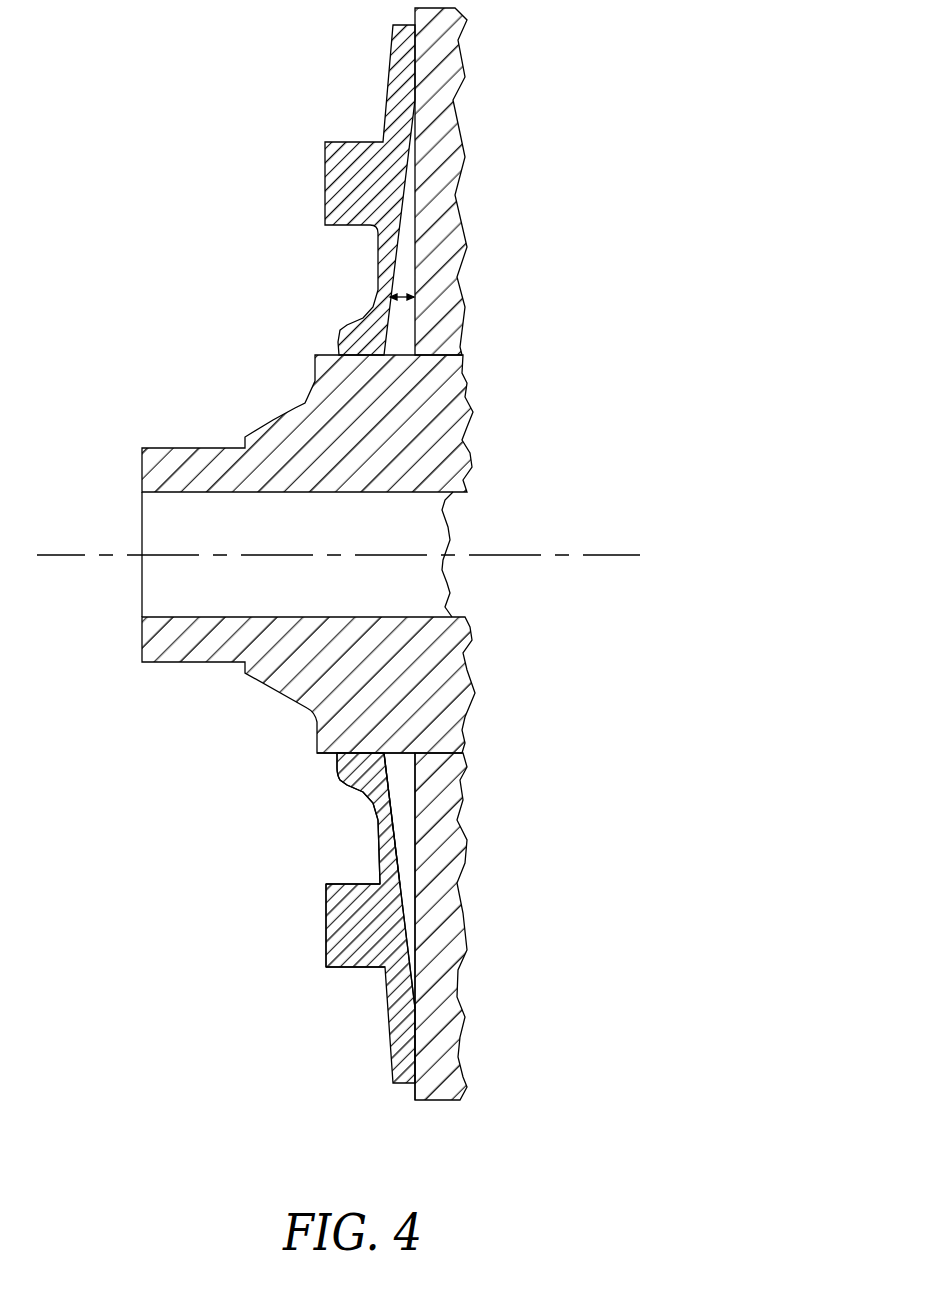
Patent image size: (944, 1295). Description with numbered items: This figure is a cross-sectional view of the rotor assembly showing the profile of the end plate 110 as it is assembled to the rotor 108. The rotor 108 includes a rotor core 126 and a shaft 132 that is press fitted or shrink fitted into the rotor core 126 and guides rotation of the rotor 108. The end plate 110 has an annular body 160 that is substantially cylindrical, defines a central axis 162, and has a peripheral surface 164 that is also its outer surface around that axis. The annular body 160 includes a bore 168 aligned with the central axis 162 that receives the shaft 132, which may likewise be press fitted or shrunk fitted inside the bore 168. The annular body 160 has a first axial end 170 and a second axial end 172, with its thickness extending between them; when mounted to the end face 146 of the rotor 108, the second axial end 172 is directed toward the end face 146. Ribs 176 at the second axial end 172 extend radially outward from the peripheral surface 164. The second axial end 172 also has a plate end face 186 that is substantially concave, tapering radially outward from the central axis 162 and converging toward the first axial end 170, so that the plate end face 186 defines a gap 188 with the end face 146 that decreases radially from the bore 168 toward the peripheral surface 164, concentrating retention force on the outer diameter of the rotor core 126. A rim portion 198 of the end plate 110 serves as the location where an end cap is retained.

The rotor 108 is at (440, 822).
The end plate 110 is at (345, 944).
The rotor core 126 is at (438, 876).
The shaft 132 is at (204, 651).
The end face 146 is at (406, 752).
The annular body 160 is at (375, 803).
The central axis 162 is at (570, 555).
The peripheral surface 164 is at (352, 967).
The bore 168 is at (362, 753).
The first axial end 170 is at (381, 838).
The second axial end 172 is at (413, 755).
The ribs 176 is at (336, 554).
The plate end face 186 is at (393, 781).
The gap 188 is at (390, 306).
The rim portion 198 is at (343, 922).